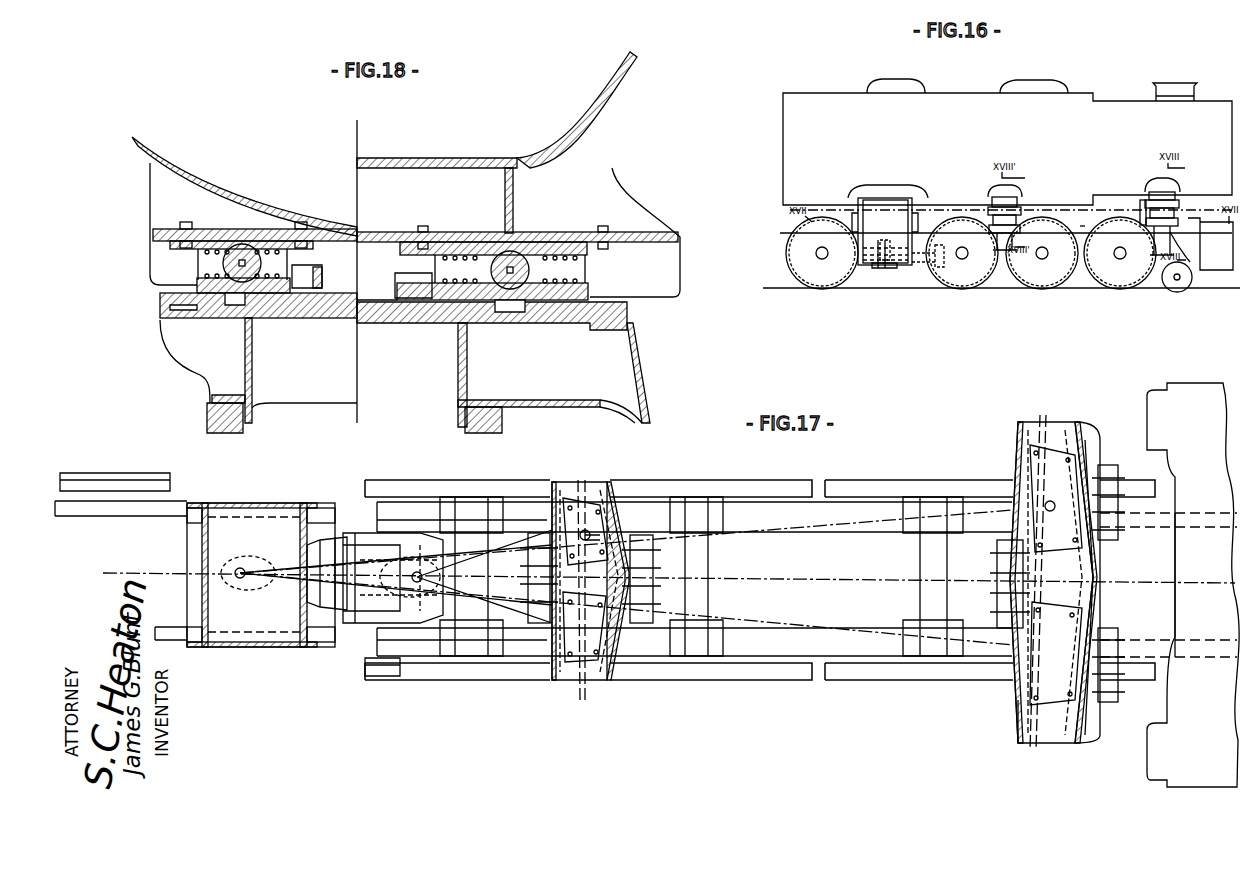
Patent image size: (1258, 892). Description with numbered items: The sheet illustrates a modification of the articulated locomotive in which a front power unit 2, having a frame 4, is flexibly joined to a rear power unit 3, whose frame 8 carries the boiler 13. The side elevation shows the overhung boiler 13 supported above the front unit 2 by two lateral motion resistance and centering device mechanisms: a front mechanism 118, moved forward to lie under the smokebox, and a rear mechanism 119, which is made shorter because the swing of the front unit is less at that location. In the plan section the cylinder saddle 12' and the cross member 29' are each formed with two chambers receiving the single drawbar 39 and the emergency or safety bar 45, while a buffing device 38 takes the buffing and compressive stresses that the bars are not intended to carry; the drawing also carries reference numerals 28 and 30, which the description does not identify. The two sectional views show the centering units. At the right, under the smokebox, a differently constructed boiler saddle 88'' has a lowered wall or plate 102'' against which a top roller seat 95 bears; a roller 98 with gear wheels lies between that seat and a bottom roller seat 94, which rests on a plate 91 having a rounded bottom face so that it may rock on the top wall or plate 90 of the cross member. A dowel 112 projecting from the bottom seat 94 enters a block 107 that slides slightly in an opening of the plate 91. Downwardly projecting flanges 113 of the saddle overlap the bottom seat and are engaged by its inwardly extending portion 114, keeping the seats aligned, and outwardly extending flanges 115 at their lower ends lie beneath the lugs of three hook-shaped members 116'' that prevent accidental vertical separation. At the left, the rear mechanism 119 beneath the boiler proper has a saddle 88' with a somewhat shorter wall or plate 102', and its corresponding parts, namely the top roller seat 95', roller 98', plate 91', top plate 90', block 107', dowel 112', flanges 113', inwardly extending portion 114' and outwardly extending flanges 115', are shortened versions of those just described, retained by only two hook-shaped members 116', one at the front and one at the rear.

In FIG. 16, the front power unit 2 is at (1082, 226).
In FIG. 16, the rear power unit 3 is at (780, 232).
In FIG. 16, the frame 4 is at (1198, 244).
In FIG. 16, the frame 8 is at (826, 222).
In FIG. 16, the cylinder saddle 12' is at (898, 226).
In FIG. 17, the cylinder saddle 12' is at (252, 575).
In FIG. 16, the boiler 13 is at (810, 93).
In FIG. 17, the frame sill 28 is at (148, 517).
In FIG. 17, the cross member 29' is at (694, 558).
In FIG. 17, the brace rod 30 is at (793, 527).
In FIG. 17, the buffing device 38 is at (347, 612).
In FIG. 16, the drawbar 39 is at (885, 241).
In FIG. 17, the drawbar 39 is at (385, 560).
In FIG. 16, the emergency drawbar 45 is at (888, 268).
In FIG. 16, the saddle 88' is at (1024, 215).
In FIG. 18, the saddle 88' is at (244, 186).
In FIG. 16, the boiler saddle 88'' is at (1183, 213).
In FIG. 18, the boiler saddle 88'' is at (497, 142).
In FIG. 18, the top wall or plate 90 is at (492, 332).
In FIG. 18, the top wall or plate 90' is at (258, 323).
In FIG. 18, the plate 91 is at (377, 284).
In FIG. 17, the plate 91 is at (1050, 569).
In FIG. 18, the plate 91' is at (196, 293).
In FIG. 17, the plate 91' is at (600, 564).
In FIG. 18, the bottom roller seat 94 is at (590, 290).
In FIG. 18, the top roller seat 95 is at (493, 231).
In FIG. 18, the top roller seat 95' is at (252, 224).
In FIG. 18, the roller 98 is at (510, 246).
In FIG. 18, the roller 98' is at (249, 233).
In FIG. 18, the wall or plate 102' is at (231, 227).
In FIG. 18, the wall or plate 102'' is at (517, 221).
In FIG. 18, the block 107 is at (501, 328).
In FIG. 18, the block 107' is at (221, 322).
In FIG. 18, the dowel 112 is at (554, 374).
In FIG. 18, the dowel 112' is at (258, 375).
In FIG. 18, the downwardly projecting flanges 113 is at (652, 232).
In FIG. 17, the downwardly projecting flanges 113 is at (991, 721).
In FIG. 18, the downwardly projecting flanges 113' is at (150, 224).
In FIG. 17, the downwardly projecting flanges 113' is at (570, 594).
In FIG. 18, the inwardly extending portion 114 is at (408, 254).
In FIG. 18, the inwardly extending portion 114' is at (320, 267).
In FIG. 17, the outwardly extending flanges 115 is at (1062, 582).
In FIG. 17, the outwardly extending flanges 115' is at (621, 552).
In FIG. 17, the hook-shaped members 116' is at (604, 540).
In FIG. 17, the hook-shaped members 116'' is at (1063, 583).
In FIG. 16, the front lateral motion resistance and centering device mechanism 118 is at (1147, 207).
In FIG. 17, the front lateral motion resistance and centering device mechanism 118 is at (1070, 427).
In FIG. 17, the rear lateral motion resistance and centering device mechanism 119 is at (601, 484).